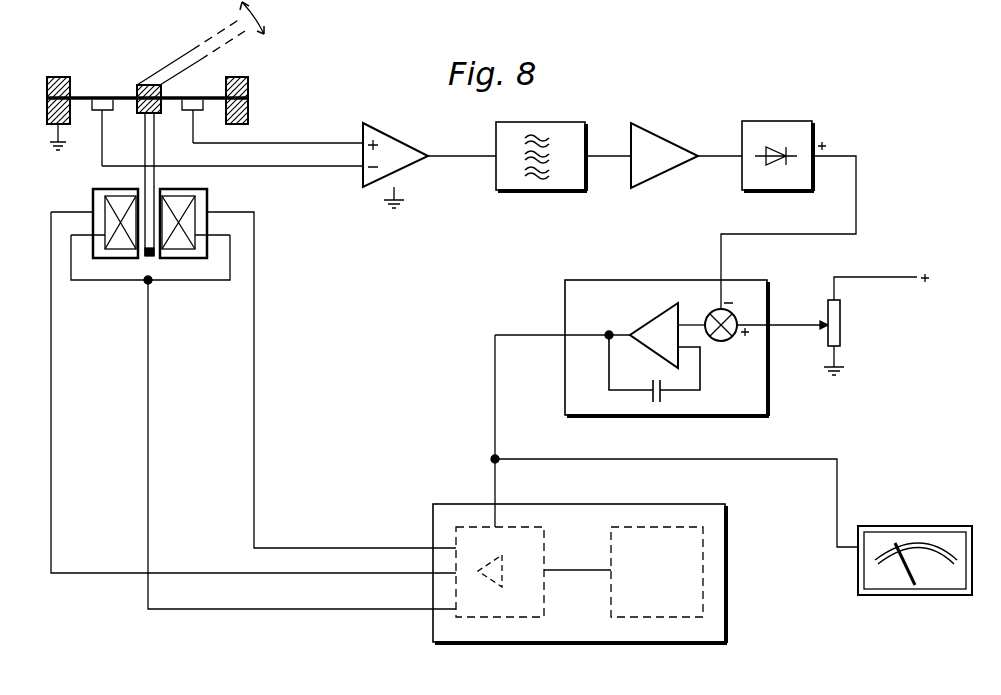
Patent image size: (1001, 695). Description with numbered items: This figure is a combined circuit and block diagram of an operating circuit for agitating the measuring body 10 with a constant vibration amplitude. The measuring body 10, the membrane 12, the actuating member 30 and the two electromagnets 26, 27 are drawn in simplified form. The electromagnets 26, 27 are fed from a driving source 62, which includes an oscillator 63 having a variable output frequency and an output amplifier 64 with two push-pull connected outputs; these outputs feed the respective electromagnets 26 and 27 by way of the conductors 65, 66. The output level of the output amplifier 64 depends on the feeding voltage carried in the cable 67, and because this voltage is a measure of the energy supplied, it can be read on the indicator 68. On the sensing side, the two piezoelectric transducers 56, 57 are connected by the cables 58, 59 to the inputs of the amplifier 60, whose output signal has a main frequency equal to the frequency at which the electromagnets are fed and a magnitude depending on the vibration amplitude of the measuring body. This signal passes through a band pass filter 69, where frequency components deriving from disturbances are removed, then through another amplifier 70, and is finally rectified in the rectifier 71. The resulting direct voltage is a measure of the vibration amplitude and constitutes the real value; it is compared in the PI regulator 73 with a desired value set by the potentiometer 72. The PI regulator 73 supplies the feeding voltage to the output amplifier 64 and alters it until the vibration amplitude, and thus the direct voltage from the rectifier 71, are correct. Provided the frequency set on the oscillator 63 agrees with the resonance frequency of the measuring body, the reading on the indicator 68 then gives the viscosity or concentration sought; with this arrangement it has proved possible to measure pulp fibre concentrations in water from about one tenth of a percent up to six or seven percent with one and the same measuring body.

The measuring body 10 is at (190, 58).
The membrane 12 is at (83, 97).
The electromagnet 26 is at (105, 205).
The electromagnet 27 is at (182, 205).
The actuating member 30 is at (148, 252).
The piezoelectric transducer 56 is at (108, 112).
The piezoelectric transducer 57 is at (183, 112).
The cable 58 is at (270, 168).
The cable 59 is at (278, 143).
The amplifier 60 is at (393, 147).
The driving source 62 is at (600, 640).
The oscillator 63 is at (690, 557).
The output amplifier 64 is at (500, 605).
The conductor 65 is at (283, 573).
The conductor 66 is at (328, 548).
The cable 67 is at (492, 475).
The indicator 68 is at (920, 526).
The band pass filter 69 is at (520, 135).
The amplifier 70 is at (670, 145).
The rectifier 71 is at (793, 134).
The potentiometer 72 is at (833, 328).
The PI regulator 73 is at (605, 288).